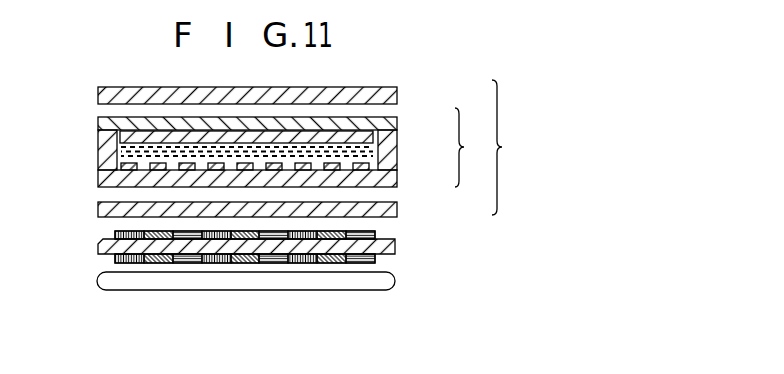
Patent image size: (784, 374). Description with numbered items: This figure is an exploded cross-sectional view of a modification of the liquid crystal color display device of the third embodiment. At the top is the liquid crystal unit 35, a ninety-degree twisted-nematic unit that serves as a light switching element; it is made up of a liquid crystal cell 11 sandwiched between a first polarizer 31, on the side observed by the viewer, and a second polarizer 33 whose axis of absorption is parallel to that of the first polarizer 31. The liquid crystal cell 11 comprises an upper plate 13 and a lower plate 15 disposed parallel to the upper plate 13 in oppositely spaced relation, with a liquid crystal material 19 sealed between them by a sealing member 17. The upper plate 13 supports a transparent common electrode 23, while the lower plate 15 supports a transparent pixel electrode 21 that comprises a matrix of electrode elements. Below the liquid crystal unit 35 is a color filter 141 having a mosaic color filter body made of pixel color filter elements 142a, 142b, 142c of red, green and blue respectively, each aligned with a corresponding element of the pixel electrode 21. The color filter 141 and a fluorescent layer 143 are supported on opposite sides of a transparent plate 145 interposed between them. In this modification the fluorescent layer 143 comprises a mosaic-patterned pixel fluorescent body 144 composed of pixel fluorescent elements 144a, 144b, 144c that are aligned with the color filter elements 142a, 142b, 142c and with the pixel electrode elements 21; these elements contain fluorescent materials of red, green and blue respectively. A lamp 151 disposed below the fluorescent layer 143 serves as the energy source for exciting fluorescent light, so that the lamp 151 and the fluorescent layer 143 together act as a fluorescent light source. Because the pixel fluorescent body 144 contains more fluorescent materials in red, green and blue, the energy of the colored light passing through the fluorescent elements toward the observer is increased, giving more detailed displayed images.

The liquid crystal cell 11 is at (469, 147).
The upper plate 13 is at (397, 124).
The lower plate 15 is at (397, 181).
The sealing member 17 is at (98, 141).
The liquid crystal material 19 is at (377, 152).
The transparent pixel electrode 21 is at (129, 167).
The transparent common electrode 23 is at (119, 131).
The first polarizer 31 is at (397, 97).
The second polarizer 33 is at (397, 211).
The liquid crystal unit 35 is at (514, 147).
The color filter 141 is at (237, 225).
The pixel color filter element 142a is at (187, 236).
The pixel color filter element 142b is at (157, 236).
The pixel color filter element 142c is at (130, 232).
The fluorescent layer 143 is at (271, 311).
The pixel fluorescent body 144 is at (235, 314).
The pixel fluorescent element 144a is at (122, 263).
The pixel fluorescent element 144b is at (160, 263).
The pixel fluorescent element 144c is at (274, 288).
The transparent plate 145 is at (103, 253).
The lamp 151 is at (395, 284).